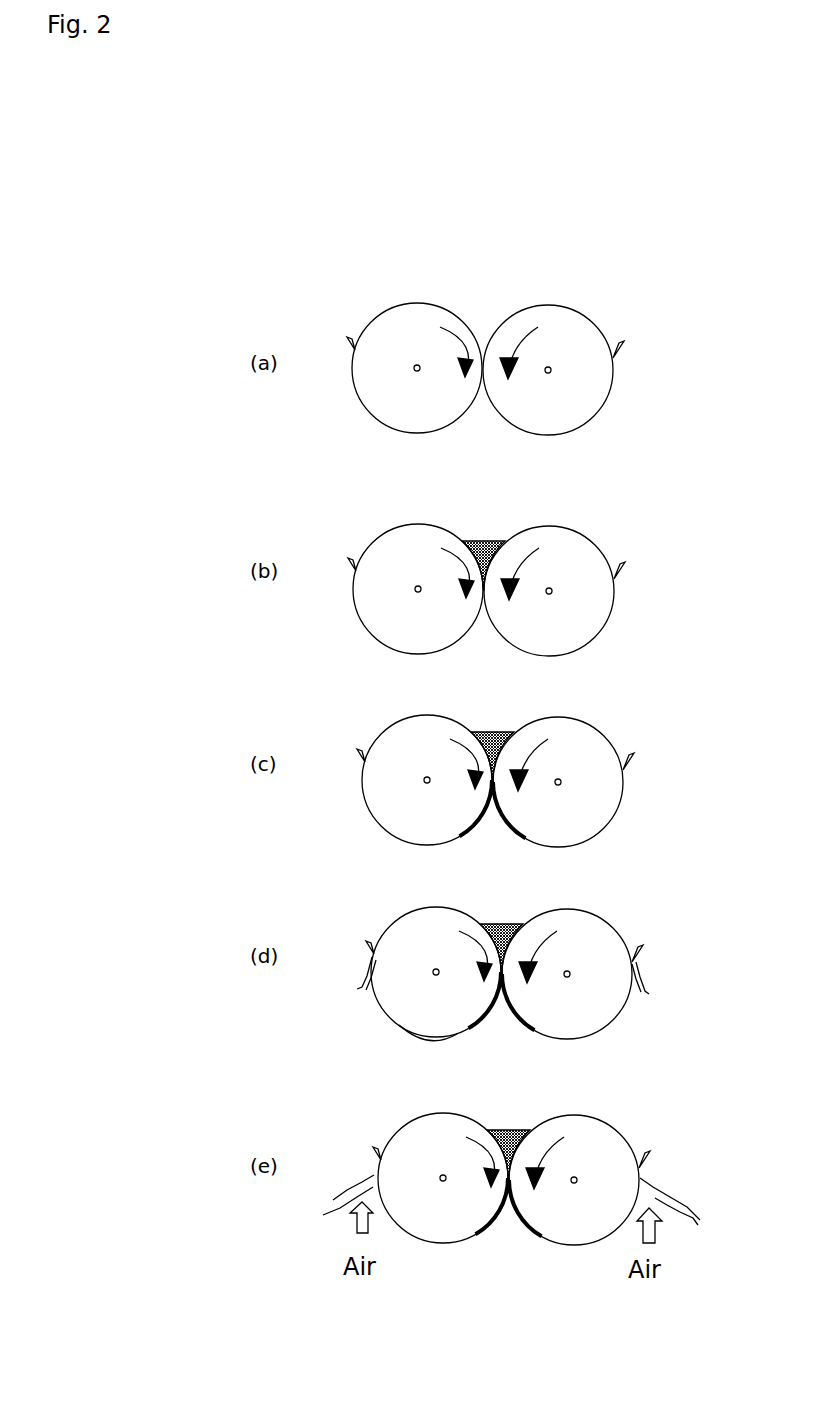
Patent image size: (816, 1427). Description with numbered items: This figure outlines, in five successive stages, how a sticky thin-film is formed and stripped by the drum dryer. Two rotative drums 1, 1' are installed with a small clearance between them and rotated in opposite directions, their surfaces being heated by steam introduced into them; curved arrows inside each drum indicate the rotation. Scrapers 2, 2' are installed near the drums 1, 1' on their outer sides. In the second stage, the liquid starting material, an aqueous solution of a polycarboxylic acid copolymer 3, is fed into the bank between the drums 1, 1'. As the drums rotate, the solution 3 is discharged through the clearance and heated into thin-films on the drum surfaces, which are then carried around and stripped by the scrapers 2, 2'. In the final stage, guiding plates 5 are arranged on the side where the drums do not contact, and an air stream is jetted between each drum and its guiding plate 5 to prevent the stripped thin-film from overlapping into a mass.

The drum 1 is at (417, 344).
The drum 1' is at (548, 345).
The scraper 2 is at (343, 318).
The scraper 2' is at (643, 329).
The aqueous solution of a polycarboxylic acid copolymer 3 is at (487, 539).
The guiding plate 5 is at (330, 1212).